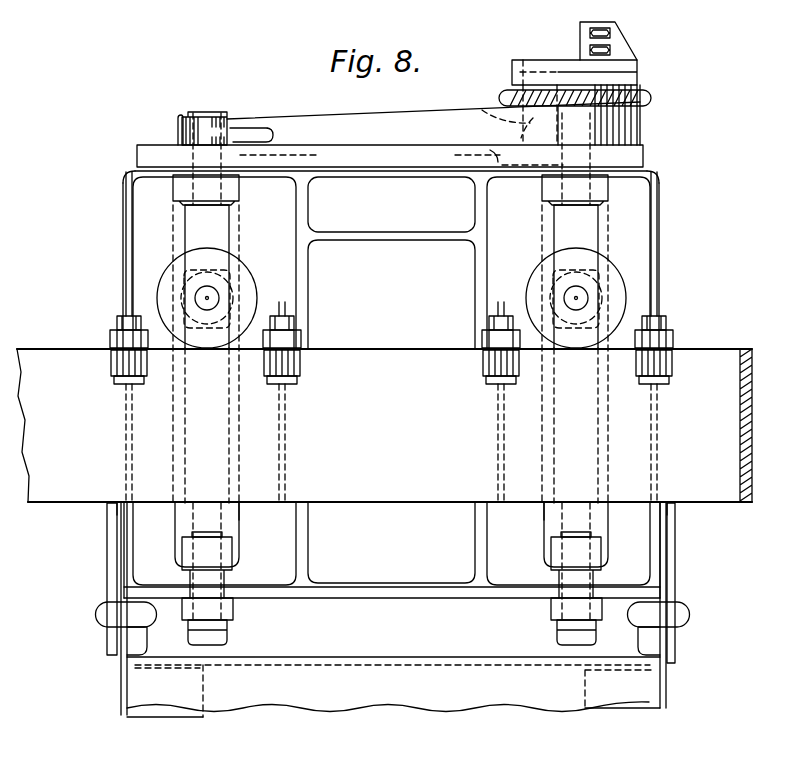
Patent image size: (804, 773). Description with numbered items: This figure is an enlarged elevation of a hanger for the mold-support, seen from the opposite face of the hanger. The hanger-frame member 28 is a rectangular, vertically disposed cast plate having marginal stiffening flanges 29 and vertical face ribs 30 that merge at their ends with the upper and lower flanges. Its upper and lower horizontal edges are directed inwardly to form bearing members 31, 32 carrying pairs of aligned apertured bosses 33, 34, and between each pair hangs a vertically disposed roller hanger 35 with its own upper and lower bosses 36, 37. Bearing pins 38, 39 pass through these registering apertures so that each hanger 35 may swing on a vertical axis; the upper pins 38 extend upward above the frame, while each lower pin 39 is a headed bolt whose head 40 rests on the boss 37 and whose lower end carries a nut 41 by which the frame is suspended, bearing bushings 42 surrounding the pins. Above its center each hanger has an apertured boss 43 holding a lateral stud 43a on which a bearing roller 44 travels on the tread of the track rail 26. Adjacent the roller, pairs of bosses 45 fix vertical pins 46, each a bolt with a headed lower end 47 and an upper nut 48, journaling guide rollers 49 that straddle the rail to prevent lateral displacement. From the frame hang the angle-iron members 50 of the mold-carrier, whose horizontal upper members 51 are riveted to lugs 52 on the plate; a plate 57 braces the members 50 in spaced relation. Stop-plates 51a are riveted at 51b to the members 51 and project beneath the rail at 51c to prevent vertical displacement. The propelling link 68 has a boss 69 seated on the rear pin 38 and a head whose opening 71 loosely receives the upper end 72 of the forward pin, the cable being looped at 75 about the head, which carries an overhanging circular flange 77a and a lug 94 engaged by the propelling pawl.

The track rail 26 is at (50, 358).
The hanger-frame member 28 is at (356, 576).
The marginal stiffening flanges 29 is at (397, 172).
The vertical face ribs 30 is at (310, 536).
The upper bearing member 31 is at (138, 178).
The lower bearing member 32 is at (152, 592).
The upper apertured boss 33 is at (162, 151).
The lower apertured boss 34 is at (232, 609).
The roller hanger 35 is at (242, 524).
The upper apertured boss of hanger 36 is at (240, 194).
The lower apertured boss of hanger 37 is at (232, 558).
The upper bearing pin 38 is at (213, 113).
The lower bearing pin 39 is at (190, 551).
The bolt head 40 is at (217, 525).
The nut 41 is at (215, 646).
The bearing bushing 42 is at (534, 640).
The apertured boss 43 is at (238, 286).
The bearing pin or stud 43a is at (208, 299).
The bearing roller 44 is at (212, 343).
The apertured bosses 45 is at (110, 343).
The vertical bearing pin 46 is at (110, 326).
The headed end 47 is at (118, 383).
The nut 48 is at (144, 312).
The guide roller 49 is at (111, 367).
The vertical member of mold-carrier 50 is at (170, 720).
The horizontal outwardly directed member 51 is at (125, 659).
The stop-plate 51a is at (710, 586).
The rivet 51b is at (710, 615).
The projecting portion of stop-plate 51c is at (703, 529).
The lug 52 is at (118, 671).
The plate 57 is at (444, 701).
The link member 68 is at (433, 112).
The apertured boss 69 is at (182, 114).
The vertical opening 71 is at (496, 113).
The projecting upper end of foremost pin 72 is at (644, 122).
The cable loop 75 is at (546, 94).
The circular flange 77a is at (620, 77).
The lug or projection 94 is at (623, 43).